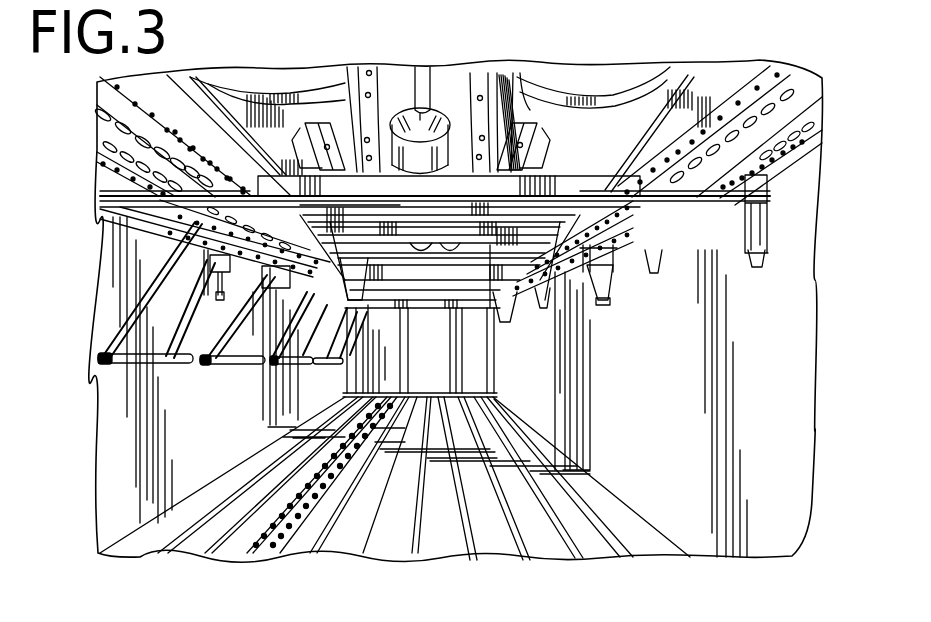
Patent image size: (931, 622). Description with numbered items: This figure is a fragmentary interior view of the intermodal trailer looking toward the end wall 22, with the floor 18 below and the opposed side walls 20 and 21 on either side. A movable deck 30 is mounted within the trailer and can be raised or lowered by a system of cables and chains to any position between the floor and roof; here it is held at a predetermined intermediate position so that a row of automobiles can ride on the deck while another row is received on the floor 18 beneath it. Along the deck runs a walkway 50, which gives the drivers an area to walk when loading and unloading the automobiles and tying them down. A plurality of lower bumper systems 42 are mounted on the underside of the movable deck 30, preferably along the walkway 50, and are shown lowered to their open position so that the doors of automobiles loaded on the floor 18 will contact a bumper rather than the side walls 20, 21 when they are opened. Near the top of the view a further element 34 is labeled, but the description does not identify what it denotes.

The floor 18 is at (398, 537).
The side wall 20 is at (113, 413).
The side wall 21 is at (778, 335).
The end wall 22 is at (437, 368).
The movable deck 30 is at (637, 206).
The hanger post 34 is at (359, 87).
The lower bumper system 42 is at (213, 370).
The walkway 50 is at (140, 221).